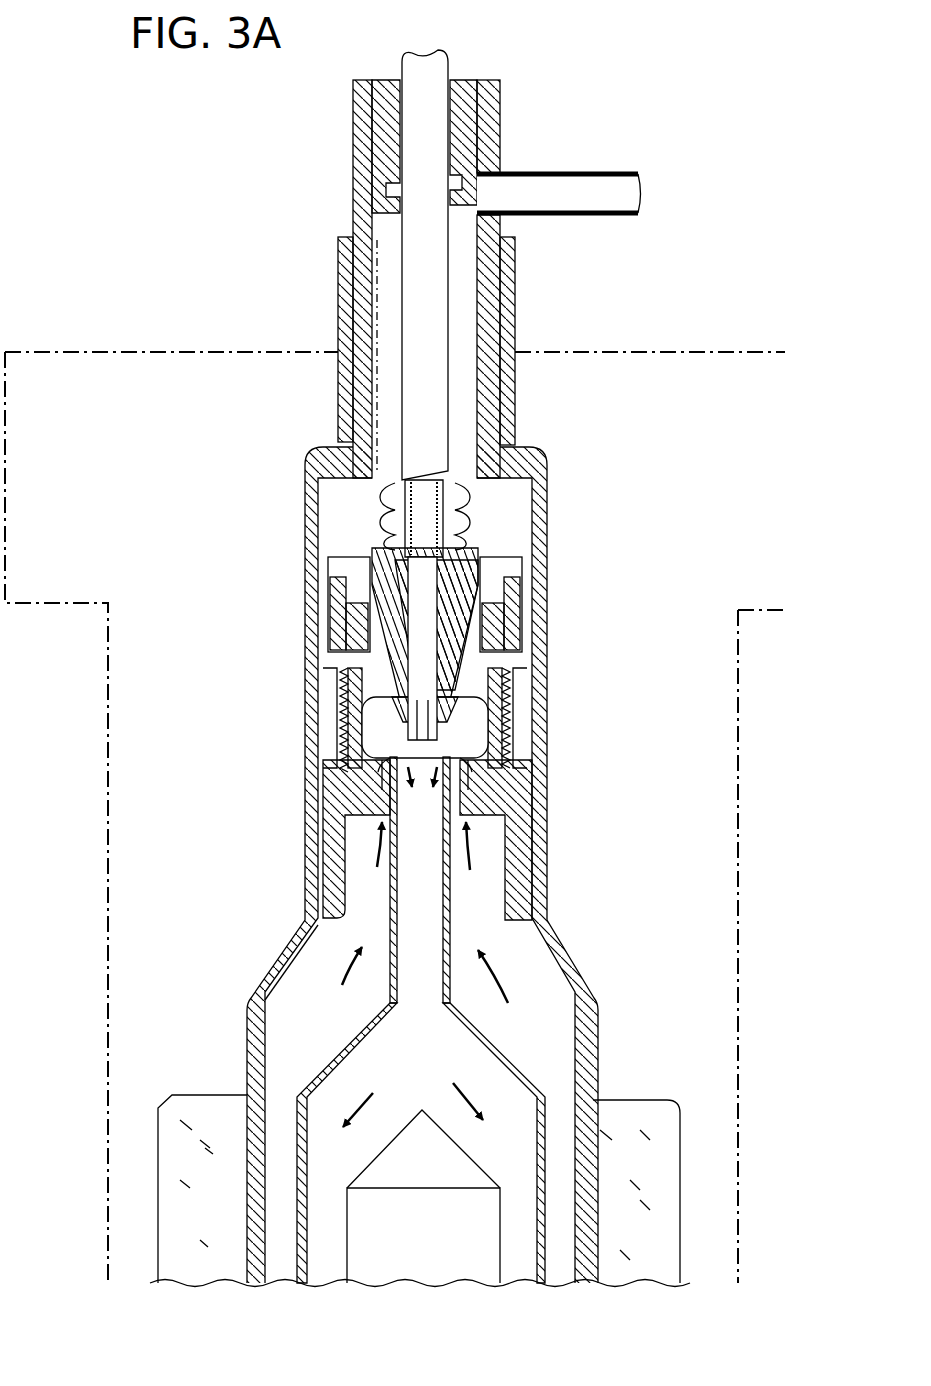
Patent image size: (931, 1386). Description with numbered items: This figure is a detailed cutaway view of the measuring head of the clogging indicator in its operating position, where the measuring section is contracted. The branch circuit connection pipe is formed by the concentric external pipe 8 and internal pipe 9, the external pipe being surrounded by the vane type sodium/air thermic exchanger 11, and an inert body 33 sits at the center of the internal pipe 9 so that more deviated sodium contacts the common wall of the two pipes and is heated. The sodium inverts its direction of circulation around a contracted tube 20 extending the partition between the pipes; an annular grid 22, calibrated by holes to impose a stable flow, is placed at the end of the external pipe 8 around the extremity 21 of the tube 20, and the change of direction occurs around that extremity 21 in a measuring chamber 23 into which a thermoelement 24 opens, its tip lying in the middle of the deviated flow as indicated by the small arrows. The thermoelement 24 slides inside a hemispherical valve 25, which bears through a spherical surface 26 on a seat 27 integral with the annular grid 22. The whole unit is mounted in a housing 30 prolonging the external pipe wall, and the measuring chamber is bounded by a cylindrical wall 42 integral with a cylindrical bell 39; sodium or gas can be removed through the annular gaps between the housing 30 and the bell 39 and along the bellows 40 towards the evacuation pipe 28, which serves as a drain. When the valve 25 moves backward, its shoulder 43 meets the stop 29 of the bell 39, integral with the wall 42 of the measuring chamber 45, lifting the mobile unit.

The external pipe 8 is at (287, 1017).
The internal pipe 9 is at (327, 1130).
The sodium/air thermic exchanger 11 is at (180, 1115).
The contracted tube 20 is at (391, 904).
The extremity 21 is at (365, 787).
The annular grid 22 is at (455, 815).
The measuring chamber 23 is at (468, 705).
The thermoelement 24 is at (433, 740).
The hemispherical valve 25 is at (462, 640).
The spherical surface 26 is at (340, 690).
The seat 27 is at (345, 712).
The evacuation pipe 28 is at (595, 190).
The stop 29 is at (330, 590).
The housing 30 is at (318, 458).
The inert body 33 is at (430, 1244).
The cylindrical bell 39 is at (465, 640).
The bellows 40 is at (372, 200).
The cylindrical wall 42 is at (345, 740).
The shoulder 43 is at (348, 603).
The measuring chamber 45 is at (470, 750).